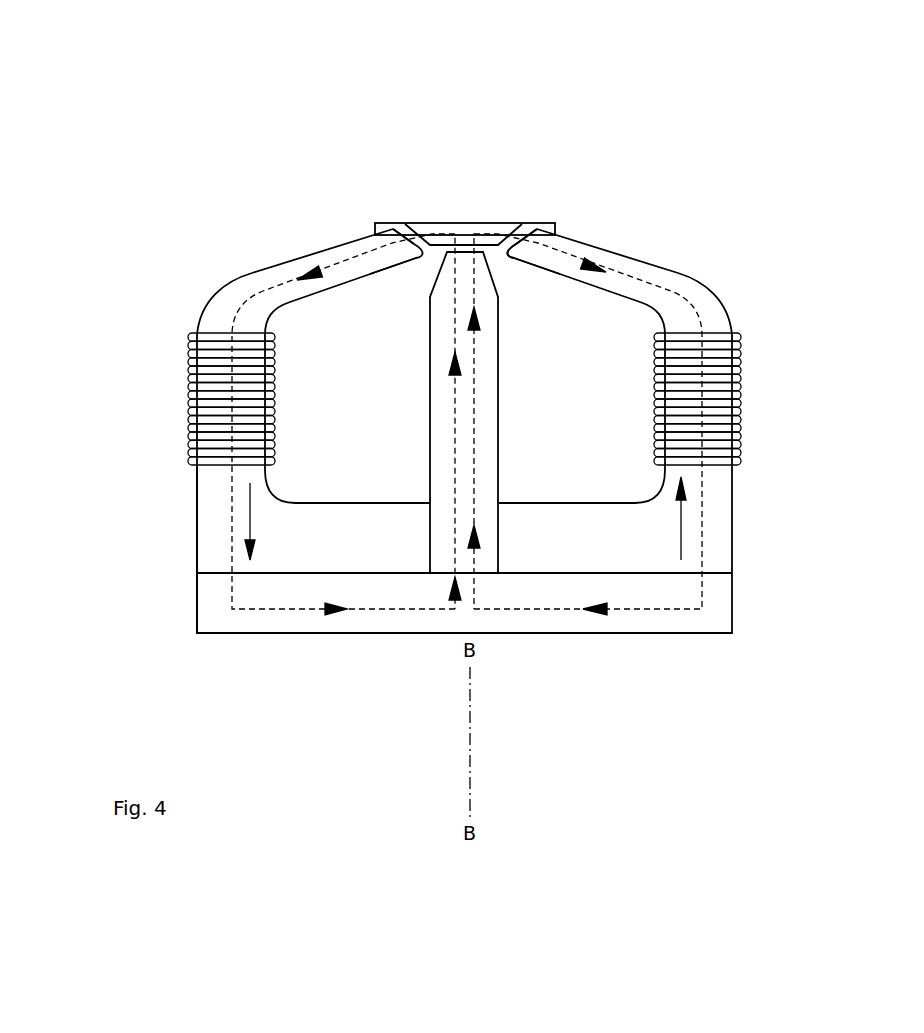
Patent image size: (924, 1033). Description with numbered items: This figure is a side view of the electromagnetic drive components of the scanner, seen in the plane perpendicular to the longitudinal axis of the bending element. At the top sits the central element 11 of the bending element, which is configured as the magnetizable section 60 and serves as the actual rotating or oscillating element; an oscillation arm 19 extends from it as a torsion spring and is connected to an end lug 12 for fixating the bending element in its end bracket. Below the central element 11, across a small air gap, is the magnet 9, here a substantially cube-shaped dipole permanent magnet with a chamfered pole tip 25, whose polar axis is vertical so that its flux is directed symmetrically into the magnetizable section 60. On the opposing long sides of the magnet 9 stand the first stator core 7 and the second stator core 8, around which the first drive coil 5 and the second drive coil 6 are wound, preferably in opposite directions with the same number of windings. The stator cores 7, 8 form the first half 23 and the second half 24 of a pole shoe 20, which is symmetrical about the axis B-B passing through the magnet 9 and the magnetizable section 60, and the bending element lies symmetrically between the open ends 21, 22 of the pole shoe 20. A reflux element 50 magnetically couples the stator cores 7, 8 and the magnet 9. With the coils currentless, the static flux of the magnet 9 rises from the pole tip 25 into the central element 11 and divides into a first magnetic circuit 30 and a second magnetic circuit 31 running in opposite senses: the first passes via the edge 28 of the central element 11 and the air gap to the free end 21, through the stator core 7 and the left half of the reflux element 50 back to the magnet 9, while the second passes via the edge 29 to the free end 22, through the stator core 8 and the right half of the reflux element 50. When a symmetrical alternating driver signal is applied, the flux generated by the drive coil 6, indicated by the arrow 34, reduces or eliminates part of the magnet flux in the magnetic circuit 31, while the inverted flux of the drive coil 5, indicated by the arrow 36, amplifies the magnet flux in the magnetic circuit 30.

The first electromagnetic drive coil 5 is at (207, 357).
The second electromagnetic drive coil 6 is at (722, 393).
The first stator core 7 is at (213, 483).
The second stator core 8 is at (678, 278).
The magnet 9 is at (487, 423).
The central element 11 is at (415, 228).
The end lug 12 is at (533, 232).
The oscillation arm 19 is at (477, 228).
The pole shoe 20 is at (372, 543).
The open end of the first stator core 21 is at (400, 223).
The open end of the second stator core 22 is at (523, 240).
The first half of the pole shoe 23 is at (210, 562).
The second half of the pole shoe 24 is at (723, 553).
The pole tip 25 is at (447, 272).
The edge of the central element 28 is at (400, 223).
The edge of the central element 29 is at (516, 242).
The first magnetic circuit 30 is at (347, 260).
The second magnetic circuit 31 is at (617, 273).
The arrow 34 is at (683, 510).
The arrow 36 is at (250, 503).
The reflux element 50 is at (702, 623).
The magnetizable section 60 is at (465, 234).